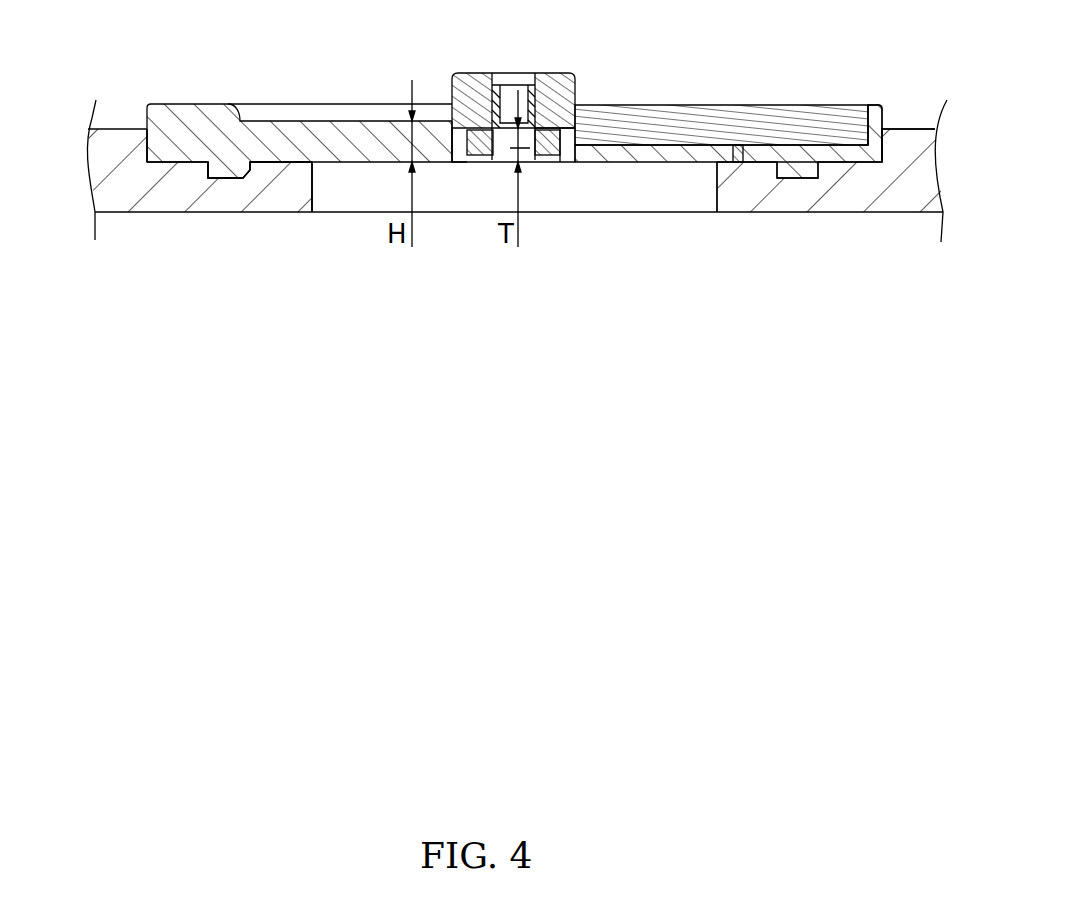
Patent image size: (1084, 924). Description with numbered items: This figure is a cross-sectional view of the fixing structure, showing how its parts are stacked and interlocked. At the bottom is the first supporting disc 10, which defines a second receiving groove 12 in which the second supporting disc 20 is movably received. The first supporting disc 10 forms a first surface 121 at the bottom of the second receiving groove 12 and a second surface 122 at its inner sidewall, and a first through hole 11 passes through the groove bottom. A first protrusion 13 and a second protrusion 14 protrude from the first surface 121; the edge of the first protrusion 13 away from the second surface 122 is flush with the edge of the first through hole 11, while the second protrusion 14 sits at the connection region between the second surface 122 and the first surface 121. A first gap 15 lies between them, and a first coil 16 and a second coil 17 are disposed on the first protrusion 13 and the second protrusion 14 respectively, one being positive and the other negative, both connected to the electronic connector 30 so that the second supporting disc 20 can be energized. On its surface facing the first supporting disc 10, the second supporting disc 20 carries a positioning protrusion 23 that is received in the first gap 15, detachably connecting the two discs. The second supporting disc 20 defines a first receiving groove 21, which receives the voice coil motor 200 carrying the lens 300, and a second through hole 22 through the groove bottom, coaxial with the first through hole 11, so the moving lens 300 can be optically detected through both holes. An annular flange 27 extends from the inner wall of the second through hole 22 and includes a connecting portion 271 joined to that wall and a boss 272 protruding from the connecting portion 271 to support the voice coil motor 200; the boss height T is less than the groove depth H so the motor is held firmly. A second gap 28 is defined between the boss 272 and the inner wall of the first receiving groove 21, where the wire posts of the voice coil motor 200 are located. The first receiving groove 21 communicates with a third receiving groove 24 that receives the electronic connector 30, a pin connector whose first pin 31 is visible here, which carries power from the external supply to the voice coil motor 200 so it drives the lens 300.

The first supporting disc 10 is at (173, 195).
The first through hole 11 is at (658, 197).
The second receiving groove 12 is at (147, 135).
The second surface 122 is at (143, 148).
The first surface 121 is at (227, 182).
The first protrusion 13 is at (267, 172).
The second protrusion 14 is at (843, 170).
The first gap 15 is at (208, 173).
The first coil 16 is at (293, 167).
The second coil 17 is at (933, 143).
The second supporting disc 20 is at (255, 137).
The first receiving groove 21 is at (460, 132).
The second through hole 22 is at (510, 138).
The positioning protrusion 23 is at (237, 168).
The third receiving groove 24 is at (870, 110).
The annular flange 27 is at (541, 238).
The connecting portion 271 is at (568, 160).
The boss 272 is at (547, 150).
The second gap 28 is at (460, 155).
The electronic connector 30 is at (665, 123).
The first pin 31 is at (740, 162).
The voice coil motor 200 is at (562, 95).
The lens 300 is at (545, 72).